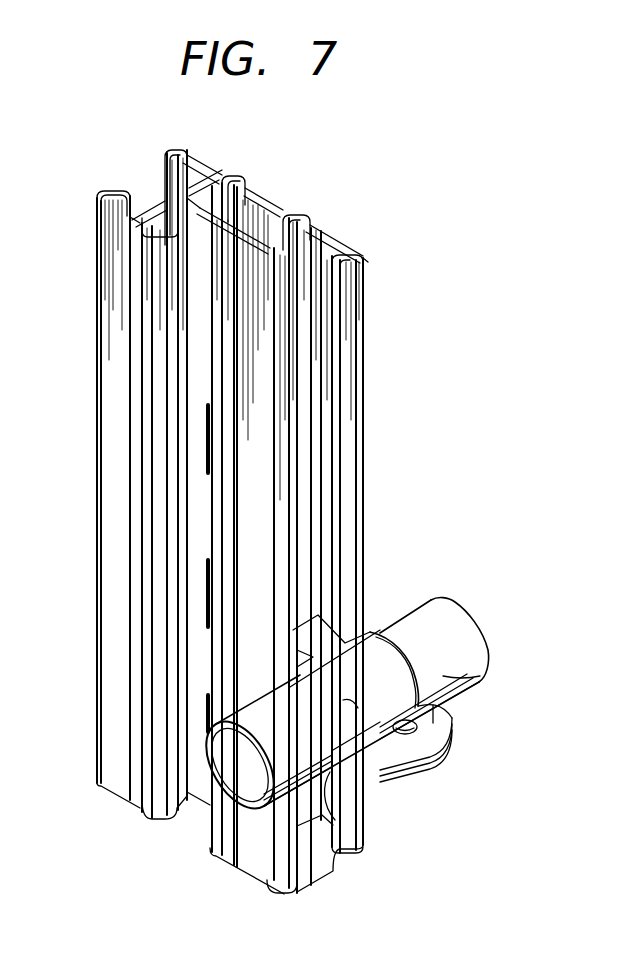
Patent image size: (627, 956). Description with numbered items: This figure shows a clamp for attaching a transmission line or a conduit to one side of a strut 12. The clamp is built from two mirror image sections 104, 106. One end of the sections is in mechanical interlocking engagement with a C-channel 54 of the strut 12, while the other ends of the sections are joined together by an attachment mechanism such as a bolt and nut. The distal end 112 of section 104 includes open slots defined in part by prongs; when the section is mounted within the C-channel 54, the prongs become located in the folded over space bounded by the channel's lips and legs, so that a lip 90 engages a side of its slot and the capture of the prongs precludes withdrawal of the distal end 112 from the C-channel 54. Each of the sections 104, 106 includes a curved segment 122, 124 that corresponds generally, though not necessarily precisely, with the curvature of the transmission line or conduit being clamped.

The strut 12 is at (368, 300).
The C-channel 54 is at (348, 422).
The lip 90 is at (376, 622).
The section 104 is at (477, 680).
The section 106 is at (432, 772).
The distal end 112 is at (321, 647).
The curved segment 122 is at (345, 718).
The curved segment 124 is at (330, 822).